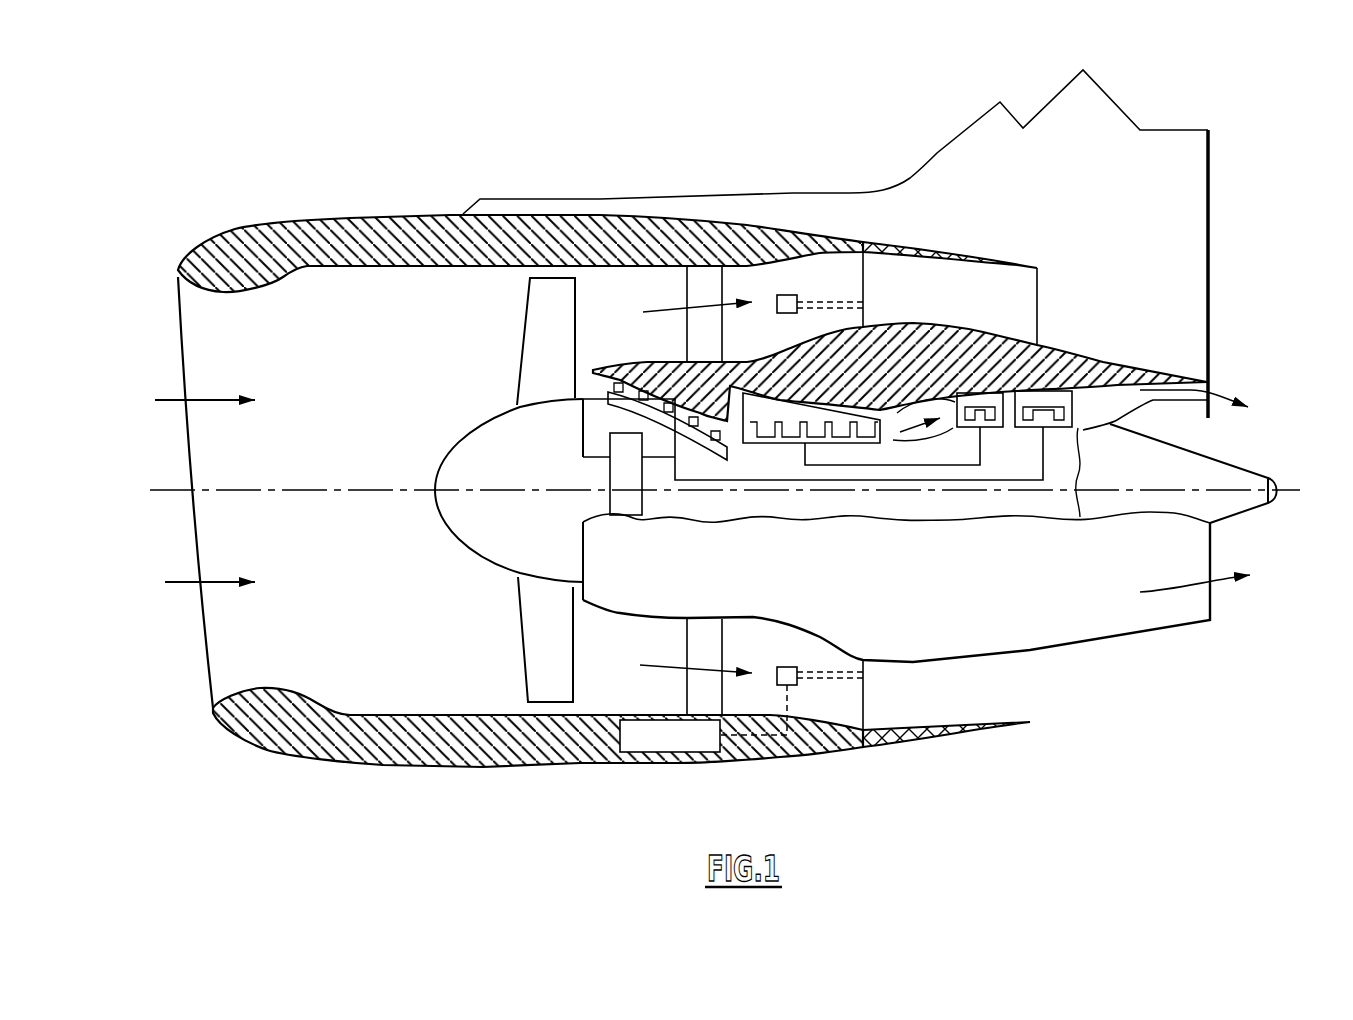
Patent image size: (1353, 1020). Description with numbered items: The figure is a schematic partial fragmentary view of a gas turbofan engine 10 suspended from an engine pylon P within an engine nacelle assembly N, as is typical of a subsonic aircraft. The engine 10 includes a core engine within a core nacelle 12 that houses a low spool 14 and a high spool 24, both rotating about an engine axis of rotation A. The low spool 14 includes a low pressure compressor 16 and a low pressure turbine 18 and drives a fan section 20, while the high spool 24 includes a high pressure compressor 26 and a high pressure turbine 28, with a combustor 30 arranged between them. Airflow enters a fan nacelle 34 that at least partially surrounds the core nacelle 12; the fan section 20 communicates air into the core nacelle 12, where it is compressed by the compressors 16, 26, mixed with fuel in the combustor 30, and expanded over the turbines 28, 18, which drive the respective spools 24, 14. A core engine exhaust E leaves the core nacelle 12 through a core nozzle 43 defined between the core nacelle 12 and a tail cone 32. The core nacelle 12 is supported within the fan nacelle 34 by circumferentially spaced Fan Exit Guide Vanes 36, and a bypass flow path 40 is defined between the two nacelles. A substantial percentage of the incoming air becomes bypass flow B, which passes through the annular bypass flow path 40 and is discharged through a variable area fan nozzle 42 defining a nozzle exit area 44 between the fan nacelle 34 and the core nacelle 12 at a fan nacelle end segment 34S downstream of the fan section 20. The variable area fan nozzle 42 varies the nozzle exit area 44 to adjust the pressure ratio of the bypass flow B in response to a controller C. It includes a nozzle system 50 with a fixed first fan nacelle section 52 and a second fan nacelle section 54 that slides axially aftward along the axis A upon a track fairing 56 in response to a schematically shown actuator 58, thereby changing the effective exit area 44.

The gas turbofan engine 10 is at (386, 176).
The core nacelle 12 is at (1055, 354).
The low spool 14 is at (863, 487).
The low pressure compressor 16 is at (703, 430).
The low pressure turbine 18 is at (1058, 428).
The fan section 20 is at (533, 637).
The high spool 24 is at (842, 464).
The high pressure compressor 26 is at (787, 428).
The high pressure turbine 28 is at (993, 430).
The combustor 30 is at (930, 440).
The tail cone 32 is at (1210, 463).
The fan nacelle 34 is at (627, 238).
The fan nacelle end segment 34S is at (1017, 263).
The Fan Exit Guide Vanes 36 is at (708, 338).
The bypass flow path 40 is at (632, 302).
The variable area fan nozzle 42 is at (933, 752).
The core nozzle 43 is at (1210, 390).
The nozzle exit area 44 is at (1037, 318).
The nozzle system 50 is at (905, 230).
The first fan nacelle section 52 is at (799, 222).
The second fan nacelle section 54 is at (948, 247).
The track fairing 56 is at (833, 310).
The actuator 58 is at (790, 295).
The engine axis of rotation A is at (1302, 490).
The bypass flow B is at (685, 663).
The controller C is at (687, 765).
The core engine exhaust E is at (1195, 588).
The engine nacelle assembly N is at (683, 203).
The engine pylon P is at (1178, 209).